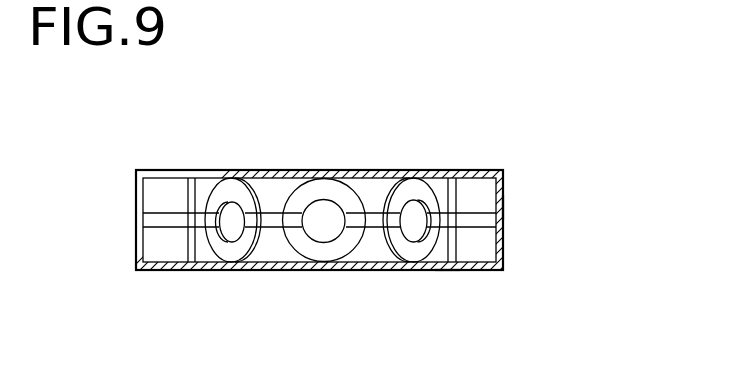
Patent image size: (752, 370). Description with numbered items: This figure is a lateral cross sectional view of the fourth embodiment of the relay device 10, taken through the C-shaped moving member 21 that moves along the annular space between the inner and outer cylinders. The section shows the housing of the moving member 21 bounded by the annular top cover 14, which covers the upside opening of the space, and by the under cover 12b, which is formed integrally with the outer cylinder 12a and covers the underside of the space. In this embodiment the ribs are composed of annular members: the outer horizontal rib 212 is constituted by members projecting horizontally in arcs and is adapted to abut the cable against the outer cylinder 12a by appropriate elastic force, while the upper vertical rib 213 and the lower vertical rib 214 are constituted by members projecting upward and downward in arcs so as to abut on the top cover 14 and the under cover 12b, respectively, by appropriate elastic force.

The relay device 10 is at (508, 131).
The C-shaped moving member 21 is at (358, 174).
The annular top cover 14 is at (438, 170).
The outer cylinder 12a is at (503, 207).
The under cover 12b is at (449, 270).
The outer horizontal rib 212 is at (152, 219).
The upper vertical rib 213 is at (183, 197).
The lower vertical rib 214 is at (183, 255).